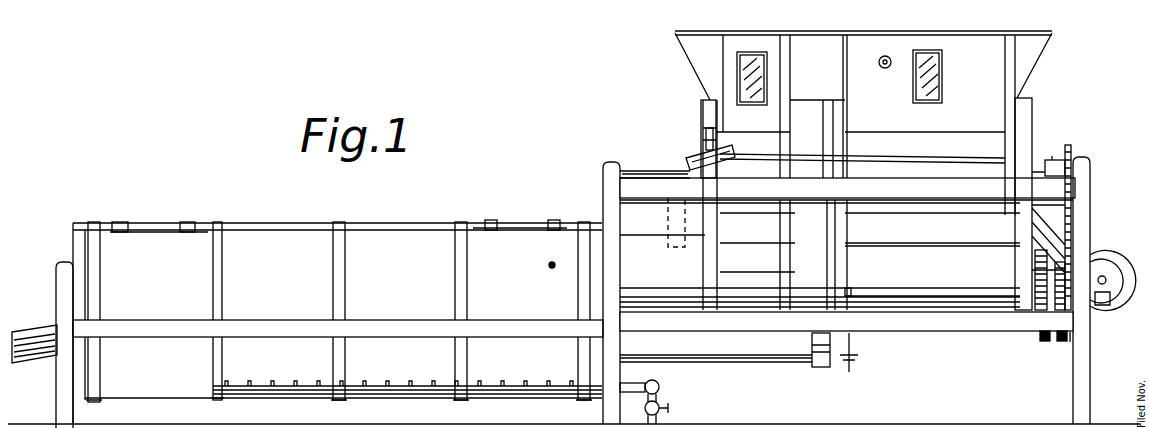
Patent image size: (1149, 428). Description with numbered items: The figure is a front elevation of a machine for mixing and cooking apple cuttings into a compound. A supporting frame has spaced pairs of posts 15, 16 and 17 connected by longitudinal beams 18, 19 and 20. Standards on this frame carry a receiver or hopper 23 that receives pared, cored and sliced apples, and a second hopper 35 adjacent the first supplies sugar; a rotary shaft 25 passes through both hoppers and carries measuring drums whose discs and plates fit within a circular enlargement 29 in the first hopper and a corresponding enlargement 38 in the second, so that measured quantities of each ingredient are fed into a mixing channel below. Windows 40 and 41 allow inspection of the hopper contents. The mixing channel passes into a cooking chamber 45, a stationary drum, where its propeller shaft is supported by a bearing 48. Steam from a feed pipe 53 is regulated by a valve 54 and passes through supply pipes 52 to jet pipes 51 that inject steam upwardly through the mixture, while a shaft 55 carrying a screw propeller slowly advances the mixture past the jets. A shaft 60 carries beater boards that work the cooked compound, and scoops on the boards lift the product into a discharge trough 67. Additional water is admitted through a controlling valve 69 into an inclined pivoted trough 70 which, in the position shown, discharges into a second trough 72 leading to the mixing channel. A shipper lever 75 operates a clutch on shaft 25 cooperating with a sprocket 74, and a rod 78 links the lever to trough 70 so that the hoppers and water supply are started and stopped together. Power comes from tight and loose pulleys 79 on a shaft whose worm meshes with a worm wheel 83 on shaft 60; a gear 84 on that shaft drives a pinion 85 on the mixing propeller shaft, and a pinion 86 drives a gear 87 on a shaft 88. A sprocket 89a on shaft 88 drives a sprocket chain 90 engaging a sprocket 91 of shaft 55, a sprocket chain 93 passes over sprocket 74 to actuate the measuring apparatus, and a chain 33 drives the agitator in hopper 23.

The posts 15 is at (1090, 214).
The posts 16 is at (604, 184).
The posts 17 is at (62, 270).
The longitudinal beam 18 is at (1060, 186).
The longitudinal beam 19 is at (1000, 320).
The longitudinal beam 20 is at (289, 321).
The receiver or hopper 23 is at (1040, 54).
The rotary shaft 25 is at (640, 167).
The circular enlargement 29 is at (986, 146).
The chain 33 is at (1040, 203).
The second hopper 35 is at (692, 62).
The circular enlargement 38 is at (862, 164).
The window 40 is at (932, 80).
The window 41 is at (756, 80).
The cooking container portion or chamber 45 is at (405, 236).
The bearing 48 is at (905, 282).
The jet pipes 51 is at (504, 382).
The supply pipes 52 is at (525, 396).
The feed pipe 53 is at (660, 386).
The valve 54 is at (668, 410).
The shaft 55 is at (776, 360).
The shaft 60 is at (966, 310).
The trough 67 is at (34, 364).
The controlling valve 69 is at (706, 136).
The inclined trough 70 is at (698, 162).
The second trough 72 is at (668, 212).
The sprocket 74 is at (1072, 160).
The shipper lever 75 is at (1055, 163).
The rod 78 is at (926, 157).
The tight and loose pulleys 79 is at (1112, 262).
The worm wheel 83 is at (1112, 293).
The gear 84 is at (1046, 342).
The pinion 85 is at (1035, 262).
The pinion 86 is at (1052, 312).
The gear 87 is at (1069, 342).
The shaft 88 is at (1111, 266).
The sprocket 89a is at (850, 290).
The sprocket chain 90 is at (835, 346).
The sprocket 91 is at (856, 366).
The sprocket chain 93 is at (1060, 232).